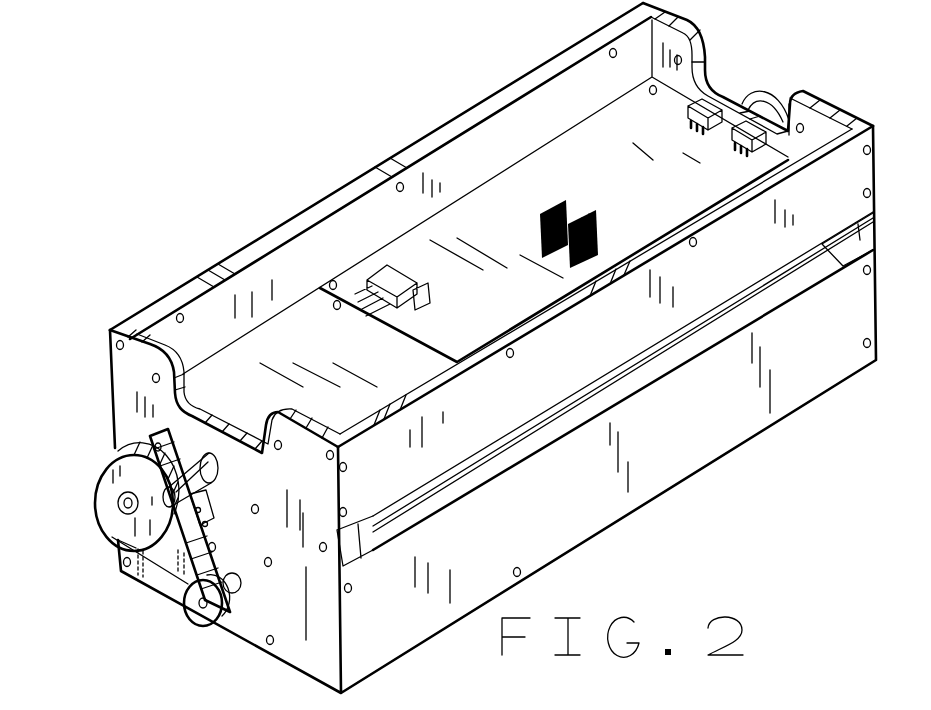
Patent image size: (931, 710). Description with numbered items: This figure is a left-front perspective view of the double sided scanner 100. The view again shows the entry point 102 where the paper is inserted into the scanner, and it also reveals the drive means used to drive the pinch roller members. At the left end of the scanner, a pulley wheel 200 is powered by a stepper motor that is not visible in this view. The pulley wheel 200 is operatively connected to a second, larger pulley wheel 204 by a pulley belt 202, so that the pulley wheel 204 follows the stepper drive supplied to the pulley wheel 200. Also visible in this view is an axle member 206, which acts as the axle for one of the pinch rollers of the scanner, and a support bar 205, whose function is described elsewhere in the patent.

The double sided scanner 100 is at (333, 170).
The entry point 102 is at (577, 415).
The pulley wheel 200 is at (203, 622).
The pulley belt 202 is at (157, 590).
The pulley wheel 204 is at (110, 487).
The support bar 205 is at (152, 440).
The axle member 206 is at (194, 480).